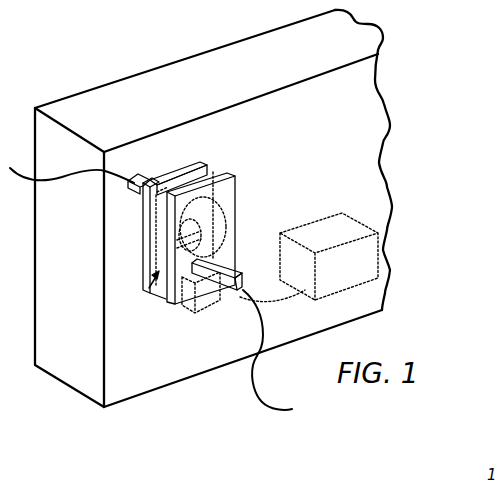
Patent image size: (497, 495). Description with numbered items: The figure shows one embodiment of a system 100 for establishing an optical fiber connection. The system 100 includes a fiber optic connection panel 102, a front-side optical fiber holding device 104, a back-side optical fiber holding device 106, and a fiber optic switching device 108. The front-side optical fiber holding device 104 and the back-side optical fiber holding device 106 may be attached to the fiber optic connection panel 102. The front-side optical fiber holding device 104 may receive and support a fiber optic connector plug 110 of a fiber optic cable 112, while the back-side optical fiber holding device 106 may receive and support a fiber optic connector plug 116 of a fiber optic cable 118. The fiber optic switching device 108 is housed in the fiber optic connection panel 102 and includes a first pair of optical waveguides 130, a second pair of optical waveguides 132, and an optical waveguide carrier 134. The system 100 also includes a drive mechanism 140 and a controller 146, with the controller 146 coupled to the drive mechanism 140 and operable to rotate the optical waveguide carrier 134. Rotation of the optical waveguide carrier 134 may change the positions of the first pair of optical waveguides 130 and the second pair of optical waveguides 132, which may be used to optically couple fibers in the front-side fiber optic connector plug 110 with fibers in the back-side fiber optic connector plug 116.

The system 100 is at (93, 64).
The fiber optic connection panel 102 is at (360, 108).
The front-side optical fiber holding device 104 is at (230, 175).
The back-side optical fiber holding device 106 is at (200, 162).
The fiber optic switching device 108 is at (143, 291).
The fiber optic connector plug 110 is at (237, 291).
The fiber optic cable 112 is at (273, 414).
The fiber optic connector plug 116 is at (146, 174).
The fiber optic cable 118 is at (60, 181).
The first pair of optical waveguides 130 is at (218, 213).
The second pair of optical waveguides 132 is at (192, 237).
The optical waveguide carrier 134 is at (160, 231).
The drive mechanism 140 is at (203, 313).
The controller 146 is at (330, 213).